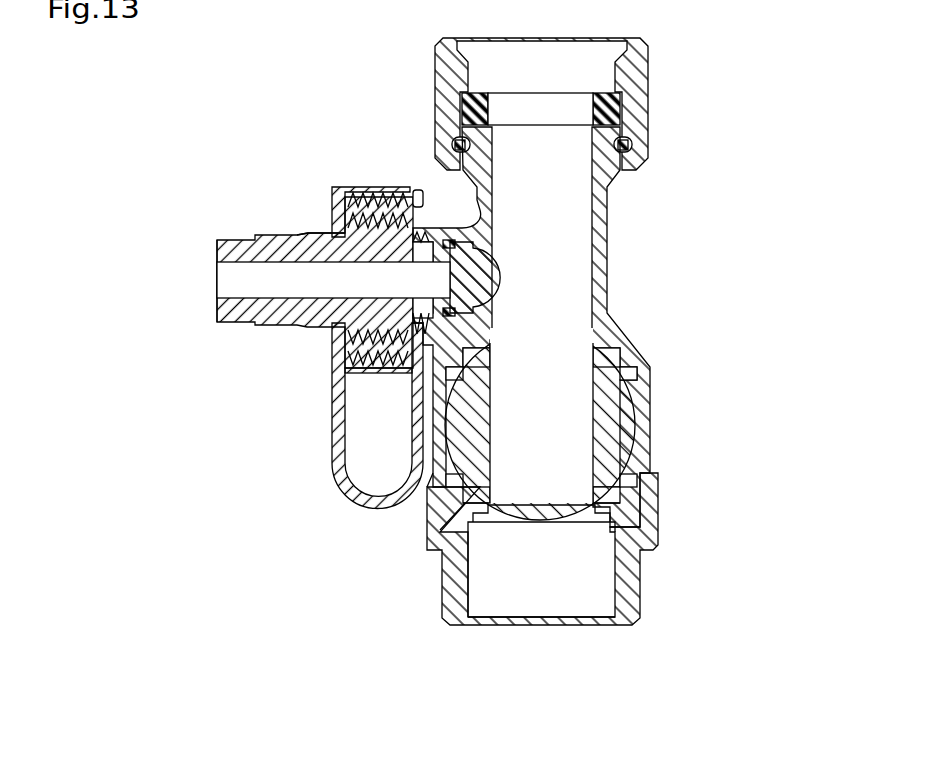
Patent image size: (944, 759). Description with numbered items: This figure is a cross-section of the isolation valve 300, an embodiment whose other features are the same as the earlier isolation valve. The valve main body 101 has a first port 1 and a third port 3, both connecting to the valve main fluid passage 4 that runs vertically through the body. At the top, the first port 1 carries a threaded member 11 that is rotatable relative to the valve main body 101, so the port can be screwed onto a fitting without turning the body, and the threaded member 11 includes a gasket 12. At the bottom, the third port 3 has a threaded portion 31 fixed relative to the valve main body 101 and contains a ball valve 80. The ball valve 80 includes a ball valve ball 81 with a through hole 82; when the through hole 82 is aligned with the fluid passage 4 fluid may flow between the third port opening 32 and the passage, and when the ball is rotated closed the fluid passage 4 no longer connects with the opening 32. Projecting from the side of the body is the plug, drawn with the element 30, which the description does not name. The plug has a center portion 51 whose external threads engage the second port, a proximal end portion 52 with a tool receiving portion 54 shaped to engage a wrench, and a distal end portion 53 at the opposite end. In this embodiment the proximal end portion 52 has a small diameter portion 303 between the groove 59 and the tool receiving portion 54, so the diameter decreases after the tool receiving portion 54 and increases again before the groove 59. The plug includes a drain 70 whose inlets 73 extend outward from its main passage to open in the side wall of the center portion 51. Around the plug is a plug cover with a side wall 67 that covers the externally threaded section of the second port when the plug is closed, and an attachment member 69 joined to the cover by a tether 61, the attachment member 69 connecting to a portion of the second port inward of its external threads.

The valve 300 is at (719, 42).
The first port 1 is at (447, 40).
The threaded member 11 is at (650, 125).
The gasket 12 is at (625, 108).
The valve main fluid passage 4 is at (575, 222).
The valve main body 101 is at (607, 247).
The ball valve 80 is at (653, 420).
The ball valve ball 81 is at (628, 392).
The through hole 82 is at (577, 373).
The third port 3 is at (640, 570).
The threaded portion 31 is at (468, 598).
The third port opening 32 is at (615, 625).
The branch fitting 30 is at (309, 252).
The small diameter portion 303 is at (280, 240).
The tool receiving portion 54 is at (235, 238).
The attachment groove 59 is at (333, 225).
The side wall 67 is at (363, 190).
The proximal end portion 52 is at (312, 324).
The center portion 51 is at (343, 163).
The tether 61 is at (377, 510).
The drain 70 is at (388, 277).
The attachment member 69 is at (418, 195).
The inlets 73 is at (425, 250).
The distal end portion 53 is at (468, 262).